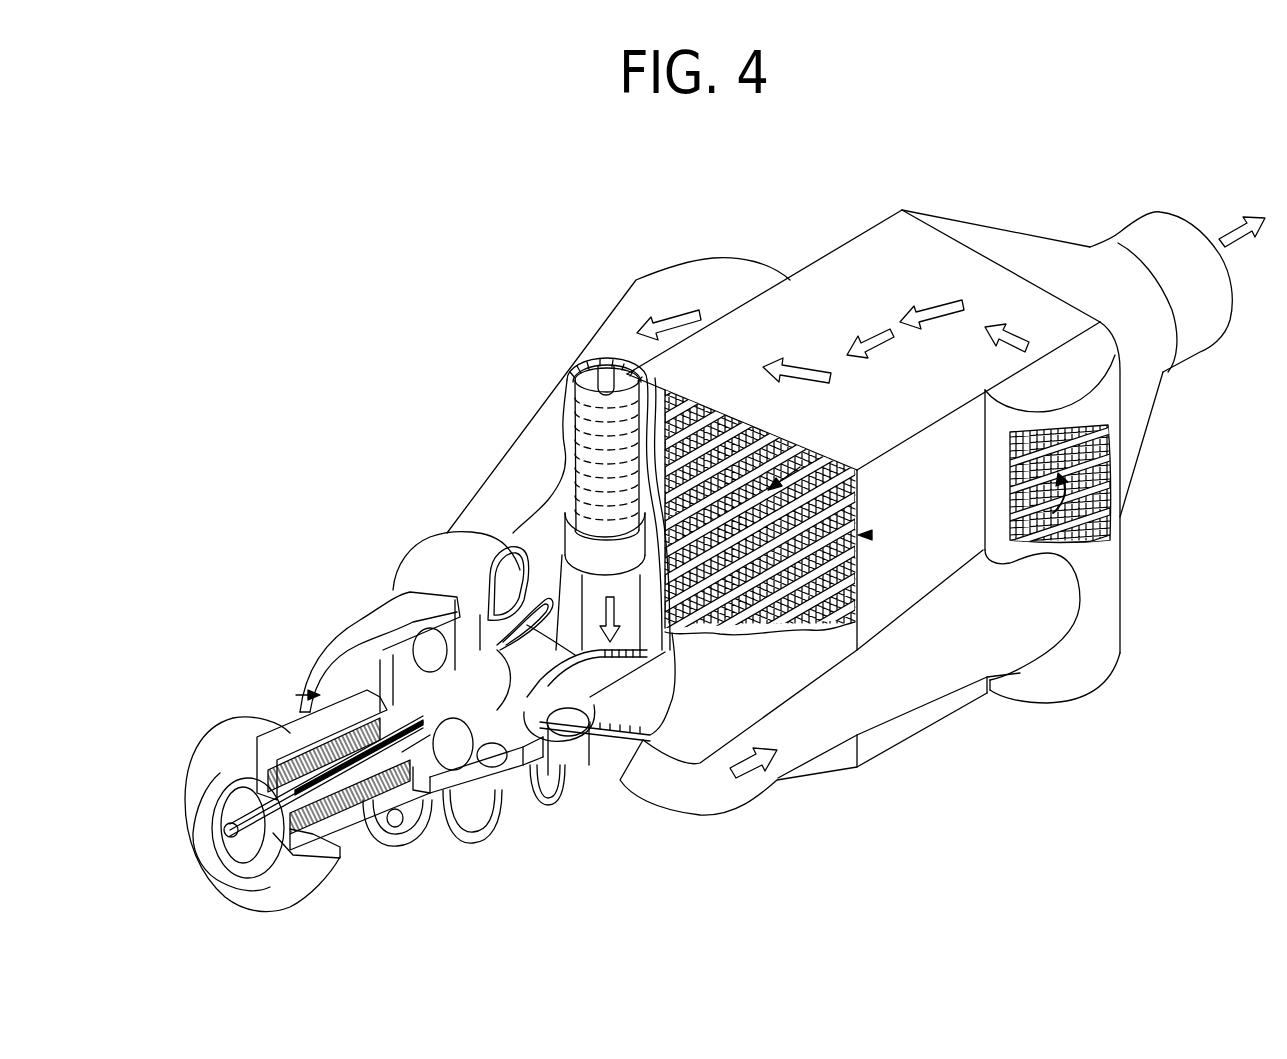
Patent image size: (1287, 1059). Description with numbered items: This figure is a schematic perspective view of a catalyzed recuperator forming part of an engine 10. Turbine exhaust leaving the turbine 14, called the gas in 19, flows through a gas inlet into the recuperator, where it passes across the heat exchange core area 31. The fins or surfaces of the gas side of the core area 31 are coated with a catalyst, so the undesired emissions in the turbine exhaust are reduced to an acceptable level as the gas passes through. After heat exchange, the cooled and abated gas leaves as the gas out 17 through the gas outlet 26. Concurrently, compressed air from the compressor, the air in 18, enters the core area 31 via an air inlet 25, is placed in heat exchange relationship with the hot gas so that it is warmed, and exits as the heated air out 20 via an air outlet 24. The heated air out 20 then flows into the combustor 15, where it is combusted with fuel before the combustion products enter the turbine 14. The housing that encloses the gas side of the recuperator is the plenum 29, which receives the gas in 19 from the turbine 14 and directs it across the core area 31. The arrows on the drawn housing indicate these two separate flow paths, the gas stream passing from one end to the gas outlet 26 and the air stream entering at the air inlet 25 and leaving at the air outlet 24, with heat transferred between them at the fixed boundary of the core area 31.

The engine 10 is at (1058, 228).
The turbine 14 is at (423, 565).
The combustor 15 is at (567, 420).
The gas out 17 is at (1230, 234).
The air in 18 is at (1108, 510).
The gas in 19 is at (705, 525).
The air out 20 is at (687, 283).
The air outlet 24 is at (658, 280).
The air inlet 25 is at (1037, 647).
The gas outlet 26 is at (1200, 350).
The plenum 29 is at (1107, 667).
The heat exchange core area 31 is at (872, 535).